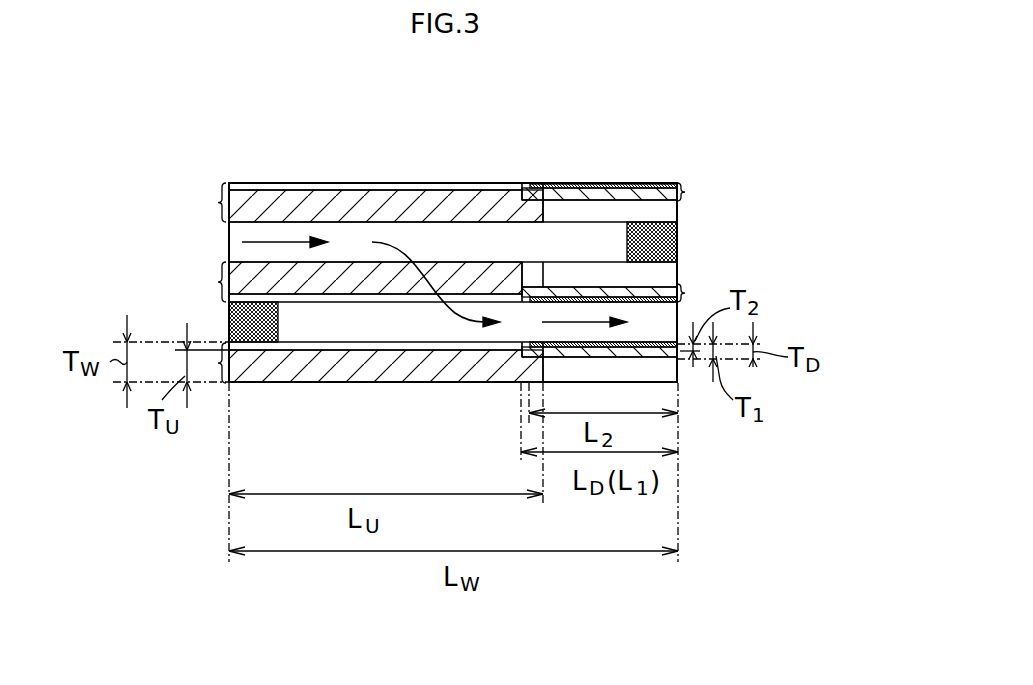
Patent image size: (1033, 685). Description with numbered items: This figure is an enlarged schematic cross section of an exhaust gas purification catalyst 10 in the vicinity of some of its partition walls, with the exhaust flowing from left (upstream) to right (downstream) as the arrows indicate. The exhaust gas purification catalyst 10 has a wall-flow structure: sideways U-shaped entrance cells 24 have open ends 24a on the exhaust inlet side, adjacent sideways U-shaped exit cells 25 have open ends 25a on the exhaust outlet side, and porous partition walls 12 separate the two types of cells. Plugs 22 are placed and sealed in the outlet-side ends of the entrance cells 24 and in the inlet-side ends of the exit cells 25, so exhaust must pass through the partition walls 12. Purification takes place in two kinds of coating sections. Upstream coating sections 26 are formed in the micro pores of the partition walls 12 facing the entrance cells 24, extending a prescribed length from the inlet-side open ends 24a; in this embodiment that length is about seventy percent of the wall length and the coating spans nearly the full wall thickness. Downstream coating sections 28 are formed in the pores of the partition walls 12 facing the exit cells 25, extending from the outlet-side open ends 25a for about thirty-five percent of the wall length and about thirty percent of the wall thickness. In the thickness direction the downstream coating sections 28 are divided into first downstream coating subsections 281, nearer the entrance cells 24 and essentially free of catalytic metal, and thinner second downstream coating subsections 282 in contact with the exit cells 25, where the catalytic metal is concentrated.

The exhaust gas purification catalyst 10 is at (740, 93).
The partition wall 12 is at (215, 203).
The plug 22 is at (231, 322).
The entrance cell 24 is at (458, 250).
The open end on the exhaust inlet side 24a is at (228, 240).
The exit cell 25 is at (445, 383).
The open end on the exhaust outlet side 25a is at (679, 313).
The upstream coating section 26 is at (348, 370).
The downstream coating section 28 is at (690, 292).
The first downstream coating subsection 281 is at (643, 353).
The second downstream coating subsection 282 is at (578, 345).